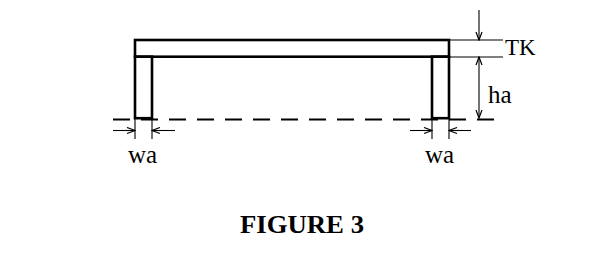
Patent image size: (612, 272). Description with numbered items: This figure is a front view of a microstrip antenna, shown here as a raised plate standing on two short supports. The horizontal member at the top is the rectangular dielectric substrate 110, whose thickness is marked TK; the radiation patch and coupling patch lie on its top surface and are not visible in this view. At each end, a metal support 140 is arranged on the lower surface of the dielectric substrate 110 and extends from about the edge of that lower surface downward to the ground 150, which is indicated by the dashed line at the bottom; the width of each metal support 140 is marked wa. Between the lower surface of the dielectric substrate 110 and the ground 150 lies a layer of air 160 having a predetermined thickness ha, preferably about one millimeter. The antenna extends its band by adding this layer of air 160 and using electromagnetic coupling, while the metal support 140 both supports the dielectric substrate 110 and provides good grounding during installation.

The dielectric substrate 110 is at (351, 40).
The metal support 140 is at (140, 83).
The ground 150 is at (267, 120).
The layer of air 160 is at (361, 97).